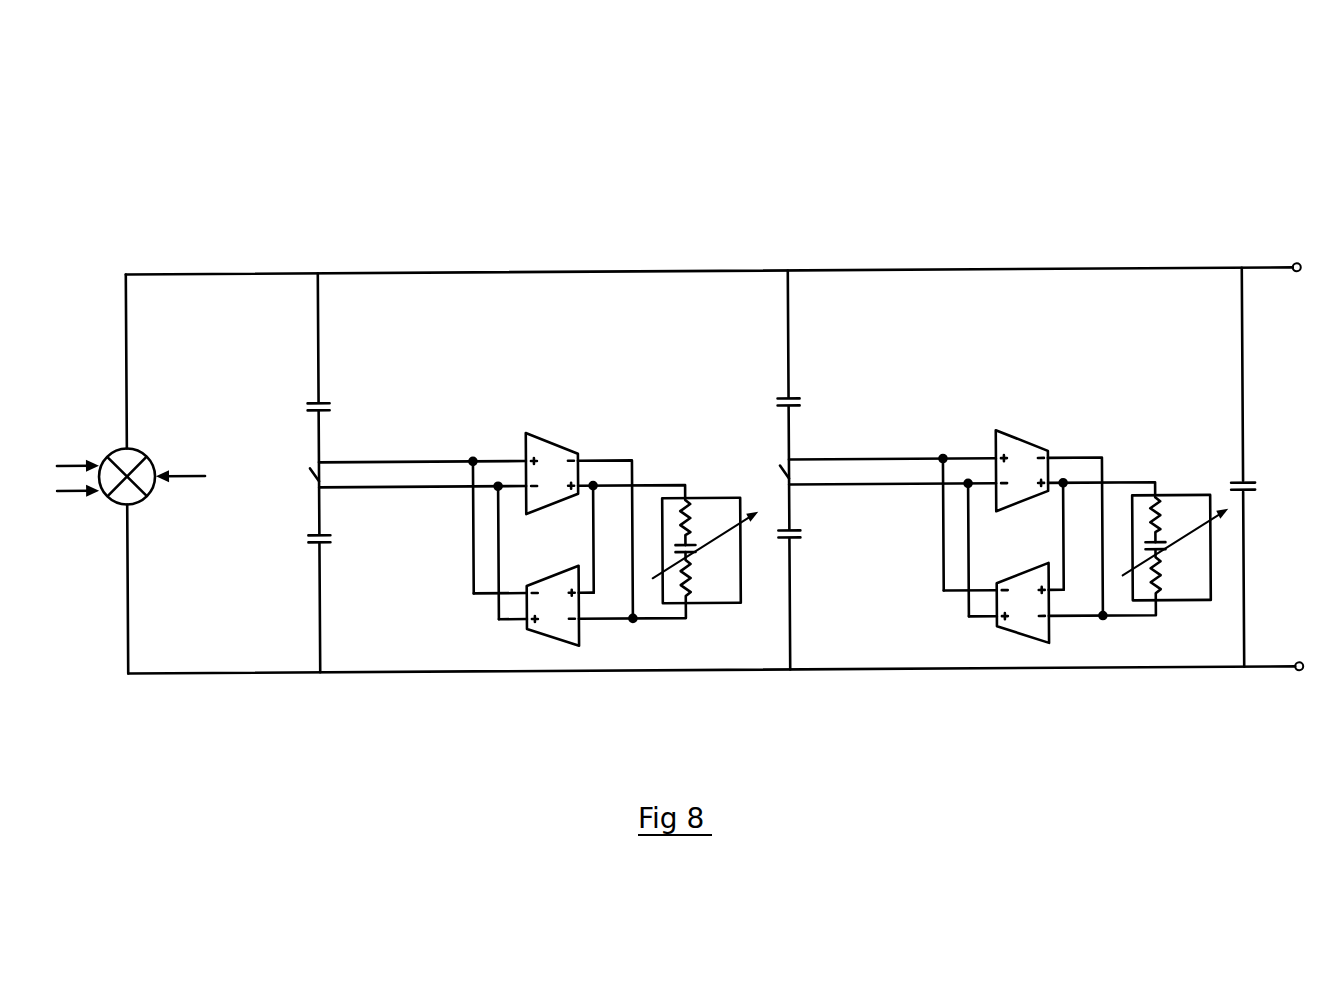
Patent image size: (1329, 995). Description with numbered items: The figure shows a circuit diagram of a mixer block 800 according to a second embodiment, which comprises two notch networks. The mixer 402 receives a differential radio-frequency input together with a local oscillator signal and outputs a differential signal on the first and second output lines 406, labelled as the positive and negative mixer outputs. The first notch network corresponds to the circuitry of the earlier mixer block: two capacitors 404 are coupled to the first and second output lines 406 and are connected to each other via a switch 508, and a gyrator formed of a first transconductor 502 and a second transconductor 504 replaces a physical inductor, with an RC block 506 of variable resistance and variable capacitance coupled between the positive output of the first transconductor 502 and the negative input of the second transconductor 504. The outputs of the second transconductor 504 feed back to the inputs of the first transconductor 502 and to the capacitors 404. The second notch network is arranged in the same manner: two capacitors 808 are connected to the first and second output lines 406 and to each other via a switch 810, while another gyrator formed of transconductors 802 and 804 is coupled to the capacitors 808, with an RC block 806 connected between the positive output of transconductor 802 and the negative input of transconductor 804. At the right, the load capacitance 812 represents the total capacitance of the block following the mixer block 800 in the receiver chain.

The mixer block 800 is at (190, 128).
The mixer 402 is at (124, 452).
The capacitors 404 is at (308, 408).
The output lines 406 is at (1092, 270).
The switch 508 is at (308, 466).
The first transconductor 502 is at (548, 436).
The second transconductor 504 is at (533, 622).
The RC block 506 is at (700, 606).
The capacitors 808 is at (778, 406).
The switch 810 is at (778, 466).
The transconductor 802 is at (1013, 436).
The transconductor 804 is at (1001, 622).
The RC block 806 is at (1166, 606).
The load capacitance 812 is at (1238, 486).